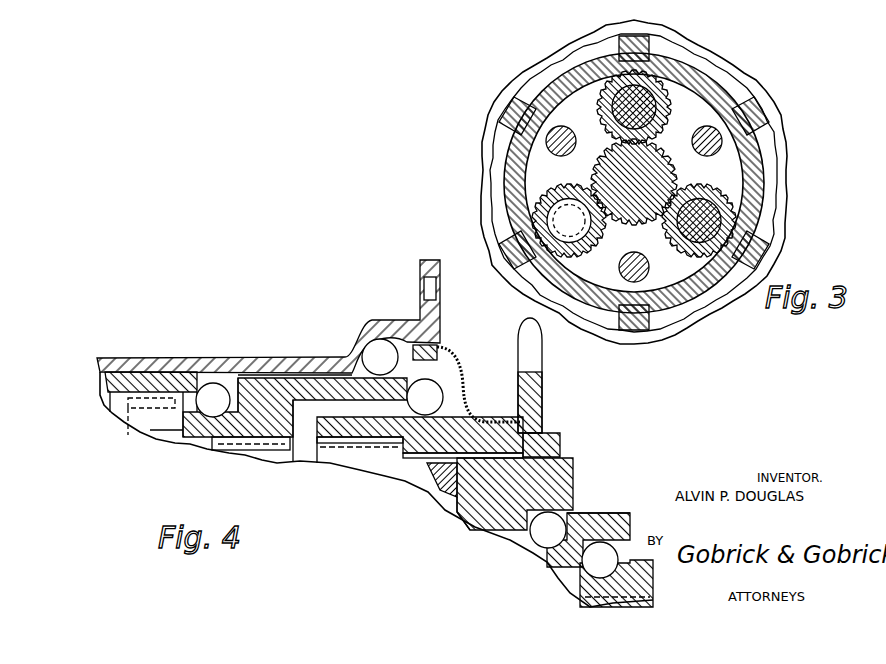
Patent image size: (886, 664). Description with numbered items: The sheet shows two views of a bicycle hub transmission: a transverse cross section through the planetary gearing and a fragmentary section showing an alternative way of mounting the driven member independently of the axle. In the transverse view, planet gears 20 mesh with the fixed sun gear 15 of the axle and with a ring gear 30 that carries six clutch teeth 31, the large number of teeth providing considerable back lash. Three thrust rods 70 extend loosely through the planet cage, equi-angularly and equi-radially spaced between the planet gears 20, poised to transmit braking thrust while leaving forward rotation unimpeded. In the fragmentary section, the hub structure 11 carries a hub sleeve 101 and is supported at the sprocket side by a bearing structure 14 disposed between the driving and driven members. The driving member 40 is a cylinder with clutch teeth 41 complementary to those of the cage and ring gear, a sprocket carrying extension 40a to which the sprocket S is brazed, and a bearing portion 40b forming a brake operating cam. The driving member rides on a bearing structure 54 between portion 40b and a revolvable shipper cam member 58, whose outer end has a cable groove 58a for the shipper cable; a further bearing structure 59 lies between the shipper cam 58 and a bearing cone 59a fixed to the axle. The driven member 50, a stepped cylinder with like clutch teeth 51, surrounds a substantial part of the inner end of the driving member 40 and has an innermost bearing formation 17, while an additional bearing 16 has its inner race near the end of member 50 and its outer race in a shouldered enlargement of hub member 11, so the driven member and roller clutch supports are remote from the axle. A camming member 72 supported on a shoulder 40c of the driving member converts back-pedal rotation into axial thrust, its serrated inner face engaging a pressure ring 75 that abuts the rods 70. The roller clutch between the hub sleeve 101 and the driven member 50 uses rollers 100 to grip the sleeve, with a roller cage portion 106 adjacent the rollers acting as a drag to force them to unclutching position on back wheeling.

In FIG. 4, the hub structure 11 is at (290, 357).
In FIG. 4, the bearing structure 14 is at (432, 388).
In FIG. 3, the sun gear 15 is at (665, 160).
In FIG. 4, the bearing 16 is at (385, 340).
In FIG. 4, the innermost bearing formation 17 is at (215, 386).
In FIG. 3, the planet gears 20 is at (664, 112).
In FIG. 3, the ring gear 30 is at (580, 66).
In FIG. 3, the clutch teeth 31 is at (508, 112).
In FIG. 4, the driving member 40 is at (370, 430).
In FIG. 4, the sprocket carrying extension 40a is at (573, 433).
In FIG. 4, the bearing portion 40b is at (575, 457).
In FIG. 4, the shoulder 40c is at (507, 482).
In FIG. 4, the clutch teeth 41 is at (323, 450).
In FIG. 3, the driven member 50 is at (498, 160).
In FIG. 4, the driven member 50 is at (258, 428).
In FIG. 3, the clutch teeth 51 is at (500, 139).
In FIG. 4, the clutch teeth 51 is at (288, 450).
In FIG. 4, the bearing structure 54 is at (553, 521).
In FIG. 4, the shipper cam member 58 is at (626, 513).
In FIG. 4, the cable groove 58a is at (607, 514).
In FIG. 4, the bearing structure 59 is at (583, 561).
In FIG. 4, the bearing cone 59a is at (600, 589).
In FIG. 3, the thrust rods 70 is at (570, 148).
In FIG. 4, the camming member 72 is at (463, 516).
In FIG. 4, the pressure ring 75 is at (435, 492).
In FIG. 4, the rollers 100 is at (152, 422).
In FIG. 4, the hub sleeve 101 is at (170, 378).
In FIG. 4, the roller cage portion 106 is at (128, 432).
In FIG. 4, the sprocket S is at (545, 381).